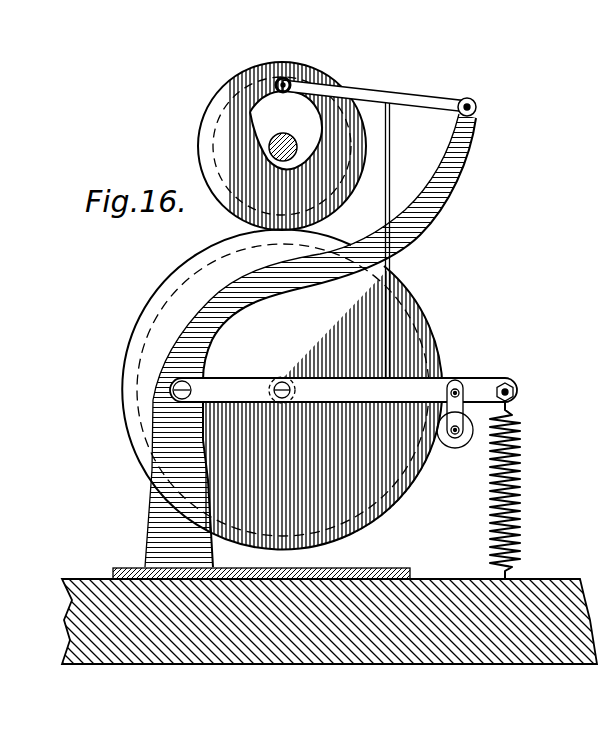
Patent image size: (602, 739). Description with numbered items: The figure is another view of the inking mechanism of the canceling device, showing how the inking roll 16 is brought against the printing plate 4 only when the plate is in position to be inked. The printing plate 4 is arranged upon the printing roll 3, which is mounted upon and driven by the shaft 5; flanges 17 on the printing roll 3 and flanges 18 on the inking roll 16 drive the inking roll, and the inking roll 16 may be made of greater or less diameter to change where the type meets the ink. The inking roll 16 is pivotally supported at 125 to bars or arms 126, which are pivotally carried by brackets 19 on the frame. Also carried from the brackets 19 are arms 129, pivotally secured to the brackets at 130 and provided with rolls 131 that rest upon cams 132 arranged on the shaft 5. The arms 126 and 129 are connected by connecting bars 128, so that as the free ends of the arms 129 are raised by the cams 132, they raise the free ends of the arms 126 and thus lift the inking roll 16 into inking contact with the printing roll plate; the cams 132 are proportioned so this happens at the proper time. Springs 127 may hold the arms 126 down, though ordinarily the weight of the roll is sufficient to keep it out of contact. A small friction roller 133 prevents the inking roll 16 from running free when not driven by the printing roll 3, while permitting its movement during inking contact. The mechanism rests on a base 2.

The base 2 is at (100, 606).
The printing roll 3 is at (210, 128).
The printing plate 4 is at (284, 178).
The shaft 5 is at (276, 152).
The inking roll 16 is at (204, 262).
The flanges 17 is at (216, 106).
The flanges 18 is at (185, 303).
The brackets 19 is at (459, 183).
The pivot 125 is at (282, 382).
The bars or arms 126 is at (484, 380).
The springs 127 is at (520, 463).
The connecting bars 128 is at (392, 255).
The arms 129 is at (418, 88).
The pivot 130 is at (477, 105).
The rolls 131 is at (292, 82).
The cams 132 is at (265, 112).
The friction roller 133 is at (470, 448).